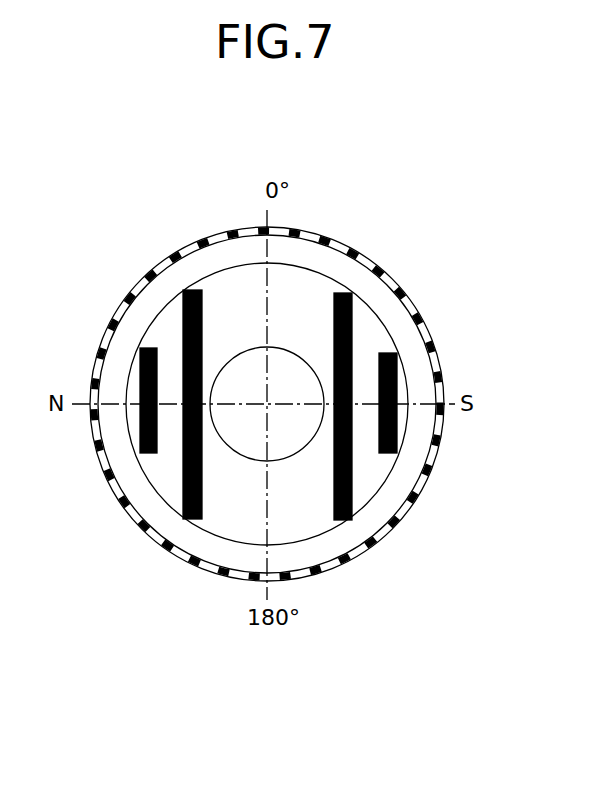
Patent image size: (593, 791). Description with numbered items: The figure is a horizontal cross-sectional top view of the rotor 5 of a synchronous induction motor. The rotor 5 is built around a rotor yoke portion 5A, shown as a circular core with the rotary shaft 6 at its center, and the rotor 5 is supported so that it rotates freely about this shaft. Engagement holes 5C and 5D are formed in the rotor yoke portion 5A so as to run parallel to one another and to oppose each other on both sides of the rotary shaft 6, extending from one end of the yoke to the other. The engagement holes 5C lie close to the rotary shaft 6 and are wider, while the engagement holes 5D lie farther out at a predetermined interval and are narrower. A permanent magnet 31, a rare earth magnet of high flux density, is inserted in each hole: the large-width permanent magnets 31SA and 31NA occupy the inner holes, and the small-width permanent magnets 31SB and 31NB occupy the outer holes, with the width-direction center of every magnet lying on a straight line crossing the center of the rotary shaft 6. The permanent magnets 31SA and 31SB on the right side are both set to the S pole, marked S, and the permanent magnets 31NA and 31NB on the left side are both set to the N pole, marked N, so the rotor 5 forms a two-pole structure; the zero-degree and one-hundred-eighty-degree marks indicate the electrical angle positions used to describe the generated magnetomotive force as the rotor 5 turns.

The rotor 5 is at (297, 231).
The rotor yoke portion 5A is at (313, 520).
The engagement hole 5C is at (206, 335).
The engagement hole 5D is at (158, 348).
The rotary shaft 6 is at (286, 347).
The permanent magnet 31 is at (125, 389).
The permanent magnet 31NA is at (197, 288).
The permanent magnet 31NB is at (147, 347).
The permanent magnet 31SA is at (345, 292).
The permanent magnet 31SB is at (388, 352).